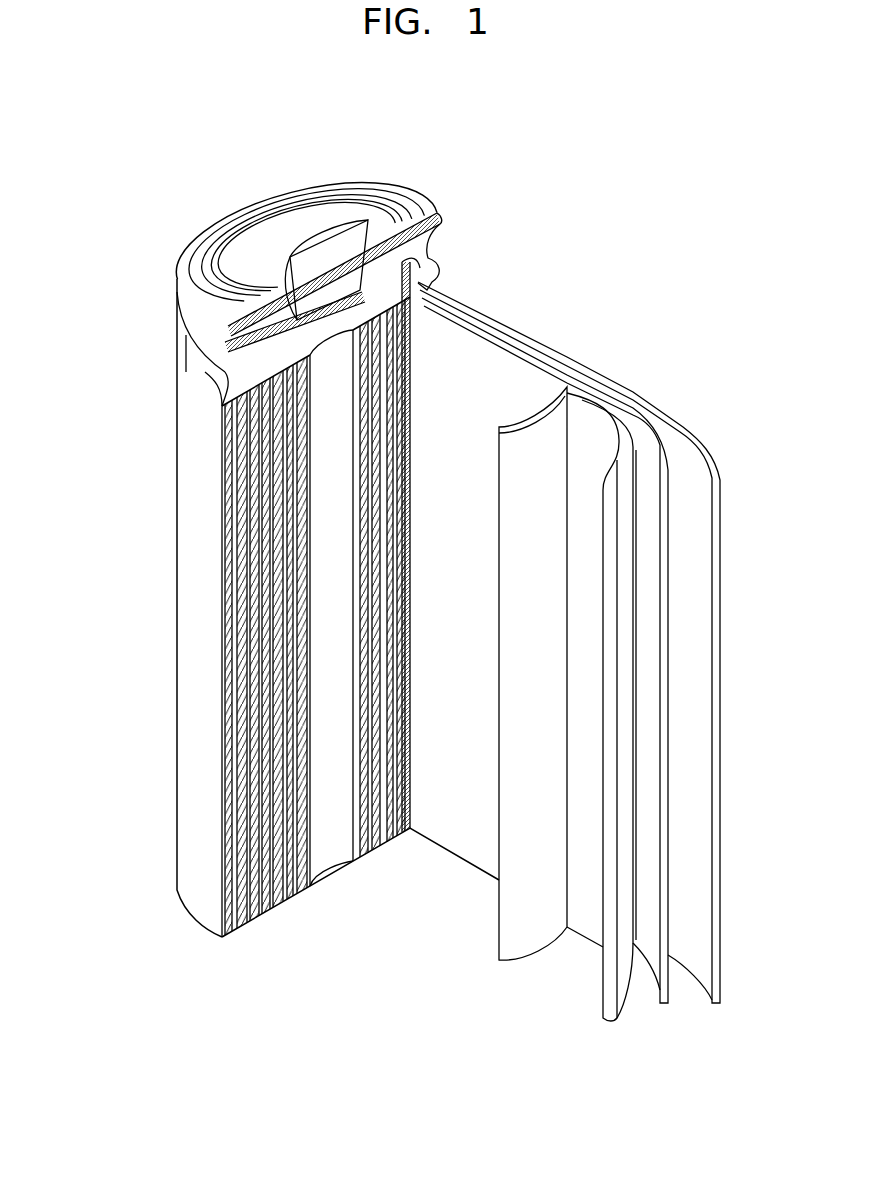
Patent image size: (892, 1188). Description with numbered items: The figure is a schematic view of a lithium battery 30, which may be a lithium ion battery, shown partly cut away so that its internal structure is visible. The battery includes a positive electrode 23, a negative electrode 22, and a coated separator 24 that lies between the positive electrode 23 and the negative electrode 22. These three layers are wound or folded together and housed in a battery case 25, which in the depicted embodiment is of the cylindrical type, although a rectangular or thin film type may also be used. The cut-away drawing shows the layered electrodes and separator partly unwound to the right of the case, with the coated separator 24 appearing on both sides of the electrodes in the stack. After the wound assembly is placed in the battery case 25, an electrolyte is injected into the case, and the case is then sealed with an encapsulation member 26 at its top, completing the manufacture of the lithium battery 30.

The lithium battery 30 is at (362, 127).
The encapsulation member 26 is at (316, 233).
The battery case 25 is at (190, 610).
The negative electrode 22 is at (703, 443).
The positive electrode 23 is at (587, 403).
The coated separator 24 is at (648, 413).